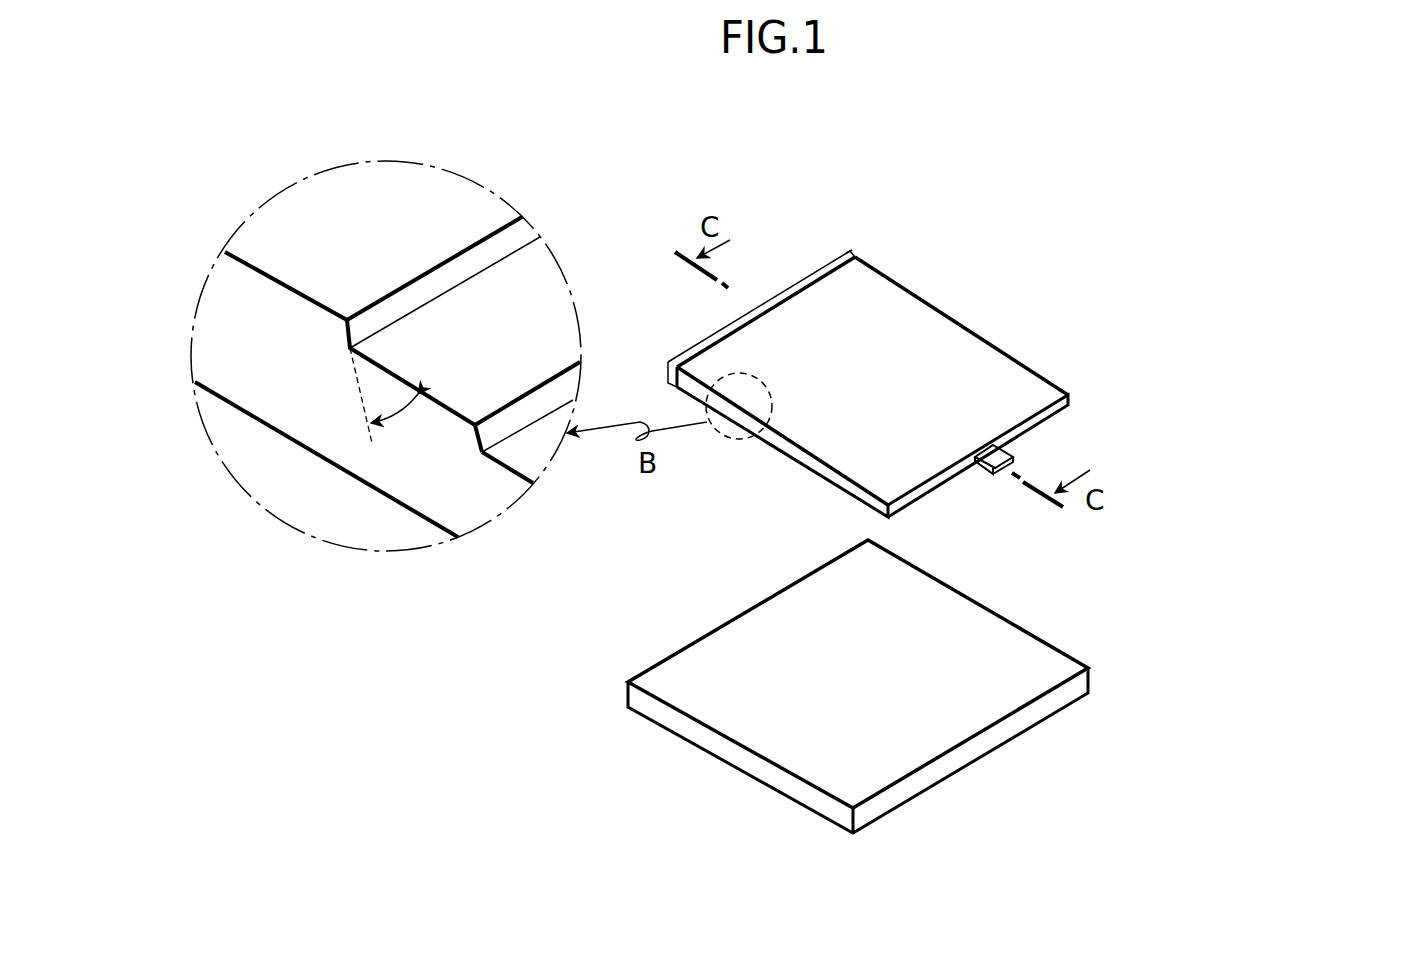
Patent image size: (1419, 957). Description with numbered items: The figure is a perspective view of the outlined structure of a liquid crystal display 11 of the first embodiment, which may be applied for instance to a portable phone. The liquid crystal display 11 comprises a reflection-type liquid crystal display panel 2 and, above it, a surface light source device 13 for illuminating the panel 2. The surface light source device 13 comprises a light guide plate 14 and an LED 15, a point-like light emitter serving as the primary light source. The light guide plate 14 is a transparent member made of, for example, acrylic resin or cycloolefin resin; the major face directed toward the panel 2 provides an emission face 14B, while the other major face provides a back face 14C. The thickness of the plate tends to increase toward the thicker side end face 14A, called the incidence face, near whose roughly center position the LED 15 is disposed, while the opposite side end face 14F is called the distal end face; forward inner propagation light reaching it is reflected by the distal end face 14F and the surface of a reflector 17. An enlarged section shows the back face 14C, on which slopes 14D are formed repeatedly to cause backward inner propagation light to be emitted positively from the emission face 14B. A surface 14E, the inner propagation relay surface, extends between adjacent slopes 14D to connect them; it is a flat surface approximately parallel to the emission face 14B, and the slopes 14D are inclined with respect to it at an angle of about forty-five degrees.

The reflection-type liquid crystal display panel 2 is at (1028, 723).
The liquid crystal display 11 is at (778, 706).
The surface light source device 13 is at (1030, 357).
The light guide plate 14 is at (1025, 380).
The incidence face 14A is at (1072, 397).
The emission face 14B is at (755, 440).
The back face 14C is at (450, 195).
The slopes 14D is at (528, 232).
The inner propagation relay surface 14E is at (355, 175).
The distal end face 14F is at (822, 273).
The LED 15 is at (982, 470).
The reflector 17 is at (853, 253).